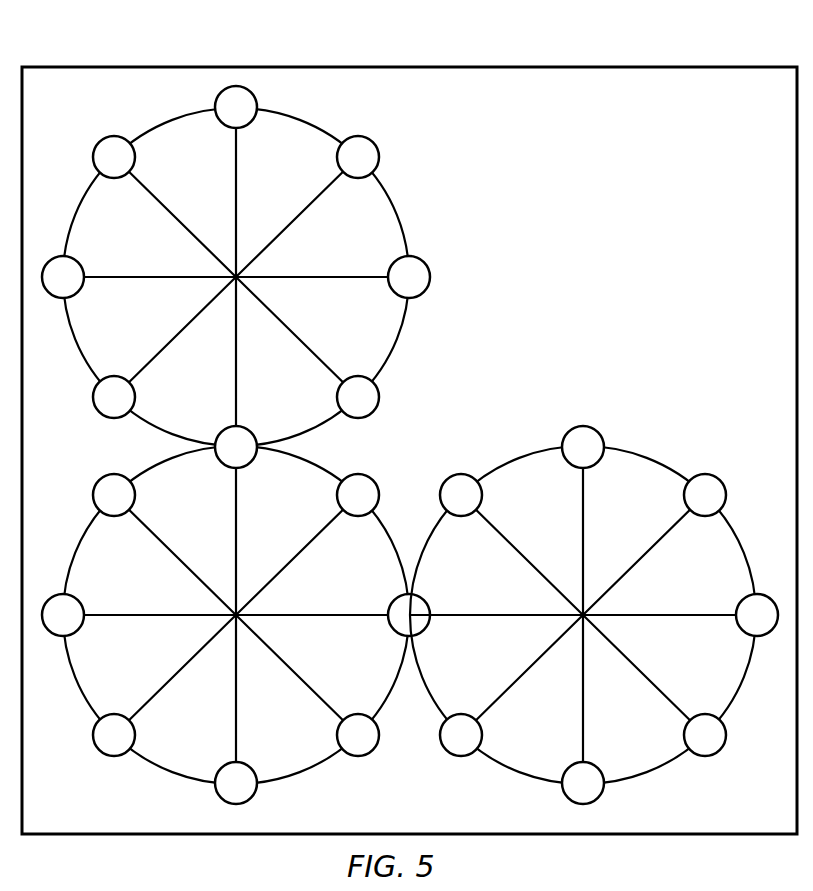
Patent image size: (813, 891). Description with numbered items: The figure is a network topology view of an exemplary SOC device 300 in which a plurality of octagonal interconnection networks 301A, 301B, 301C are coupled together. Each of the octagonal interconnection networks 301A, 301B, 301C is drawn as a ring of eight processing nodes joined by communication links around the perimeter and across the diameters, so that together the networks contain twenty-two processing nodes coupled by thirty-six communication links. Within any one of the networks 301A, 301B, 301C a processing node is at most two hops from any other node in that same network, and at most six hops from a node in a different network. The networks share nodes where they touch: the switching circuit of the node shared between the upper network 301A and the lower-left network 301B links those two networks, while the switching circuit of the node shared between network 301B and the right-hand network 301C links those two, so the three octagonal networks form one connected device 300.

The SOC device 300 is at (407, 66).
The octagonal interconnection network 301A is at (417, 201).
The octagonal interconnection network 301B is at (333, 773).
The octagonal interconnection network 301C is at (645, 433).